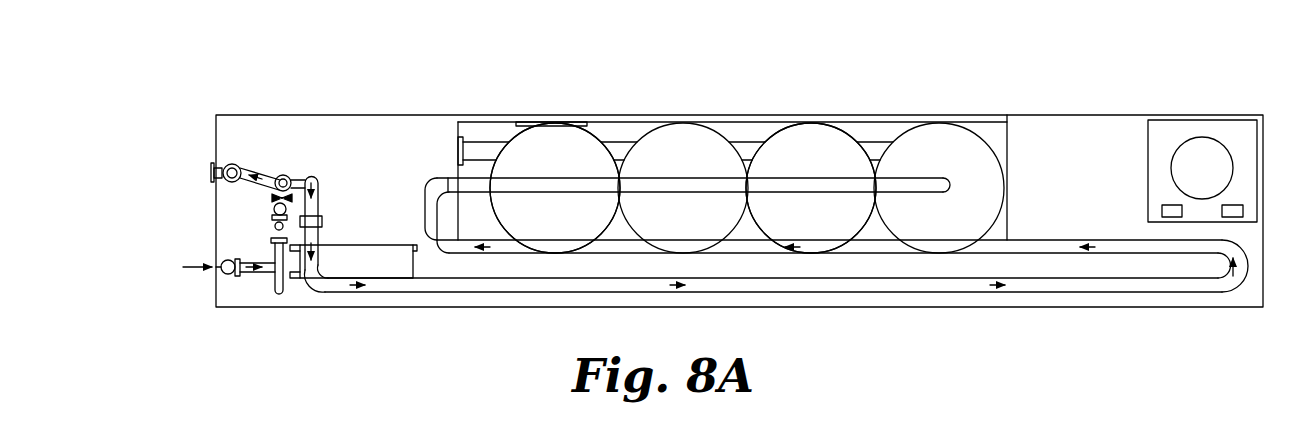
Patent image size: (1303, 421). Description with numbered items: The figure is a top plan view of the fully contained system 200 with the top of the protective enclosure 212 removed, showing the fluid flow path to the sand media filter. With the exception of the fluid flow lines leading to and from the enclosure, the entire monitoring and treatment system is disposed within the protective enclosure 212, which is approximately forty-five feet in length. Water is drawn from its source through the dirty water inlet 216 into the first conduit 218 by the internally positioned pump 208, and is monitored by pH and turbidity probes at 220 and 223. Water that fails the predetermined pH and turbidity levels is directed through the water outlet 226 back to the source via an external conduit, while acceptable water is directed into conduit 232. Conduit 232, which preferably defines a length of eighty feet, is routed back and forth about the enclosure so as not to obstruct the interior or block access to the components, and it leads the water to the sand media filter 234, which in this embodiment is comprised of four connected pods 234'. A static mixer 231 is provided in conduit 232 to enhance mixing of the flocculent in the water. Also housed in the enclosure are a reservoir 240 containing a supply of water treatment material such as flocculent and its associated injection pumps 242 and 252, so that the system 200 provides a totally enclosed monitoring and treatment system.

The fully contained system 200 is at (965, 68).
The pump 208 is at (367, 245).
The protective enclosure 212 is at (1050, 114).
The dirty water inlet 216 is at (215, 268).
The first conduit 218 is at (294, 190).
The pH probe location 220 is at (278, 192).
The turbidity probe location 223 is at (284, 176).
The water outlet 226 is at (212, 172).
The static mixer 231 is at (323, 222).
The conduit 232 is at (868, 292).
The sand media filter 234 is at (732, 162).
The pods 234' is at (732, 160).
The reservoir 240 is at (1192, 137).
The injection pump 242 is at (1162, 212).
The injection pump 252 is at (1236, 205).